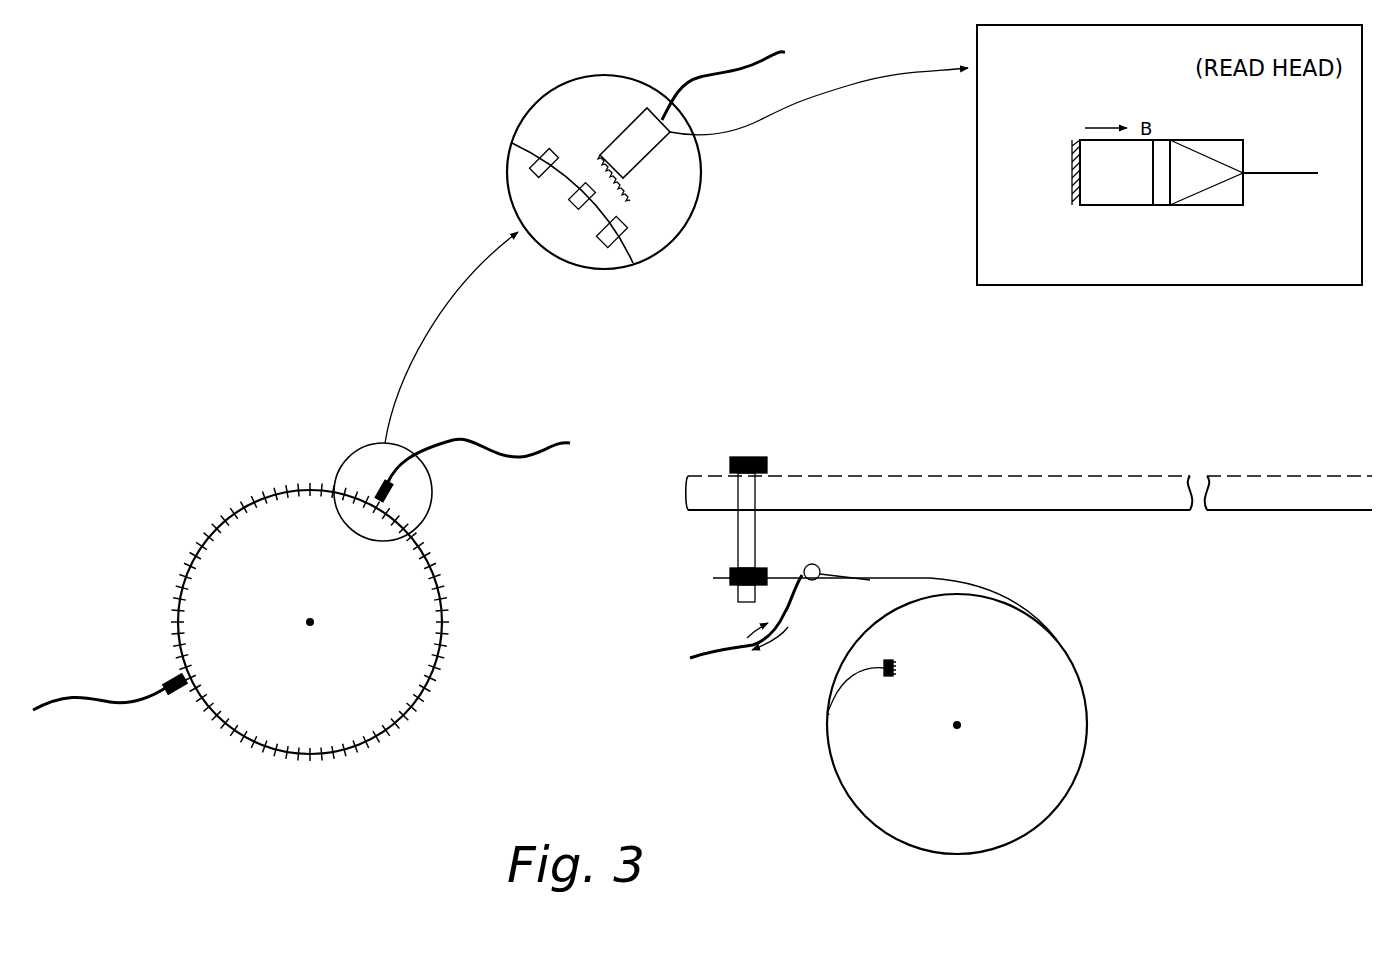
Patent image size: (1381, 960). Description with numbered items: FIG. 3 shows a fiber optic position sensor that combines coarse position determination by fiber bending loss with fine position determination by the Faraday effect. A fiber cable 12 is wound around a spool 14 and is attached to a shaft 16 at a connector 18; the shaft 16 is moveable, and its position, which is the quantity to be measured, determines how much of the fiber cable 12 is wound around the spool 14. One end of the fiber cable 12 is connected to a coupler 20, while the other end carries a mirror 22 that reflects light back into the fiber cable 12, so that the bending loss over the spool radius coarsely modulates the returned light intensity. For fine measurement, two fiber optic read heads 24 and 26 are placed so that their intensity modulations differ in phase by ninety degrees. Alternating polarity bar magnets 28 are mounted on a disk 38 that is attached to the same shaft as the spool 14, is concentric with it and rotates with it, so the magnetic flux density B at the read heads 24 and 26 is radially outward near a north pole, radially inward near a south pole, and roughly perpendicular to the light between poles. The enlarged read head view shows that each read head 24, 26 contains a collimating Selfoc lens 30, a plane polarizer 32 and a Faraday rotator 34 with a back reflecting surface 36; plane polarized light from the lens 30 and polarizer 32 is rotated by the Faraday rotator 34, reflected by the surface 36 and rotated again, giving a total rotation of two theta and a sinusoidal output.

The fiber cable 12 is at (932, 578).
The spool 14 is at (957, 724).
The shaft 16 is at (868, 474).
The connector 18 is at (732, 572).
The coupler 20 is at (818, 566).
The mirror 22 is at (895, 660).
The read head 24 is at (648, 153).
The read head 26 is at (165, 700).
The bar magnets 28 is at (583, 182).
The Selfoc lens 30 is at (1215, 205).
The plane polarizer 32 is at (1160, 140).
The Faraday rotator 34 is at (1122, 205).
The back reflecting surface 36 is at (1072, 150).
The disk 38 is at (310, 622).